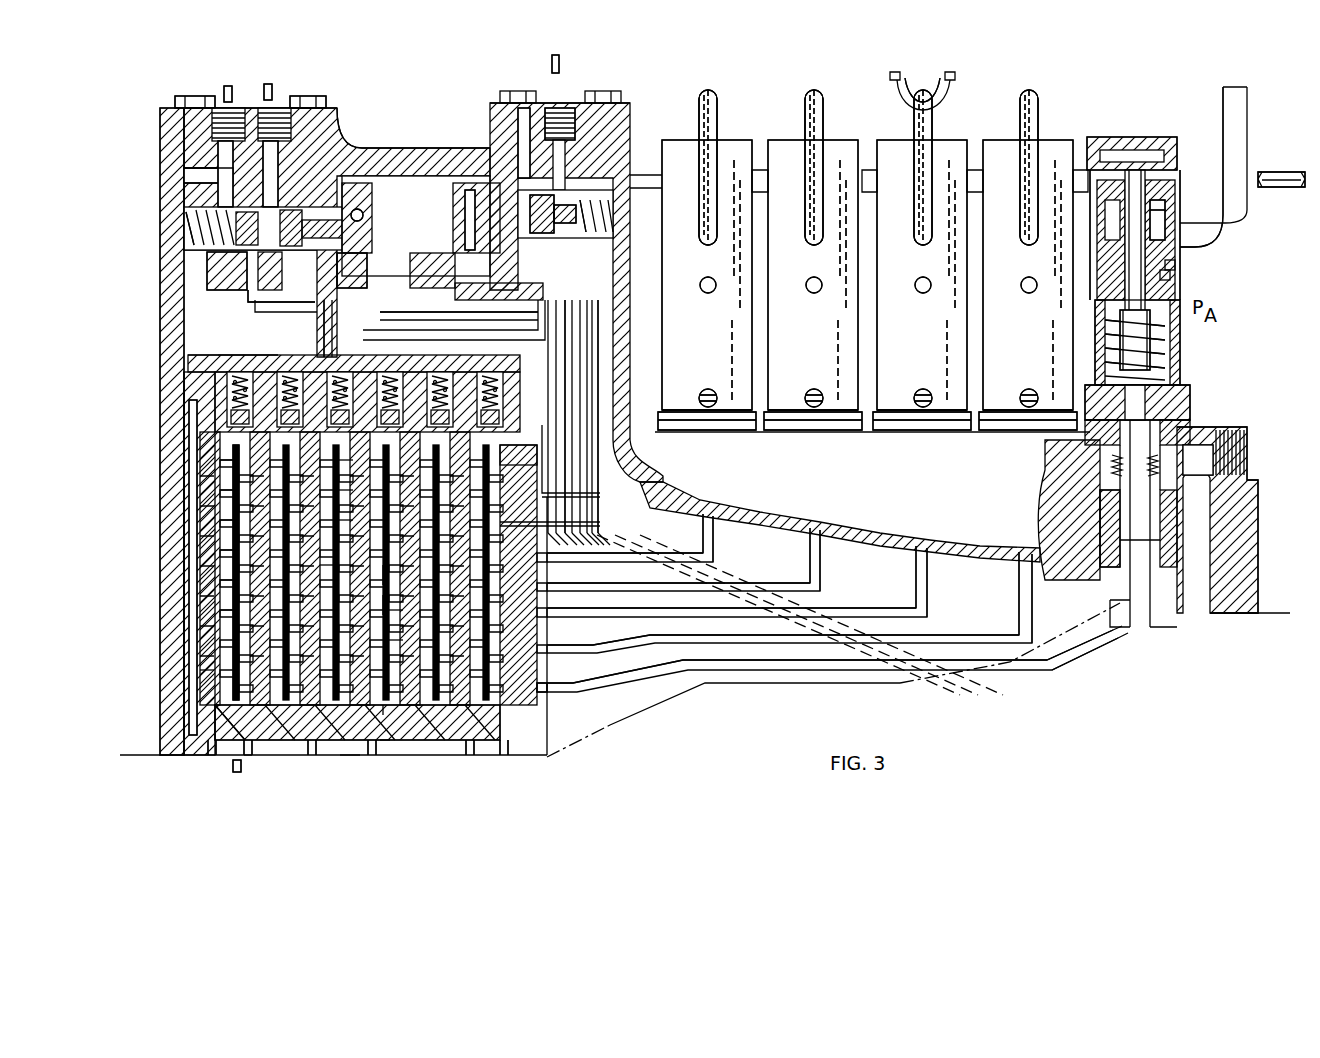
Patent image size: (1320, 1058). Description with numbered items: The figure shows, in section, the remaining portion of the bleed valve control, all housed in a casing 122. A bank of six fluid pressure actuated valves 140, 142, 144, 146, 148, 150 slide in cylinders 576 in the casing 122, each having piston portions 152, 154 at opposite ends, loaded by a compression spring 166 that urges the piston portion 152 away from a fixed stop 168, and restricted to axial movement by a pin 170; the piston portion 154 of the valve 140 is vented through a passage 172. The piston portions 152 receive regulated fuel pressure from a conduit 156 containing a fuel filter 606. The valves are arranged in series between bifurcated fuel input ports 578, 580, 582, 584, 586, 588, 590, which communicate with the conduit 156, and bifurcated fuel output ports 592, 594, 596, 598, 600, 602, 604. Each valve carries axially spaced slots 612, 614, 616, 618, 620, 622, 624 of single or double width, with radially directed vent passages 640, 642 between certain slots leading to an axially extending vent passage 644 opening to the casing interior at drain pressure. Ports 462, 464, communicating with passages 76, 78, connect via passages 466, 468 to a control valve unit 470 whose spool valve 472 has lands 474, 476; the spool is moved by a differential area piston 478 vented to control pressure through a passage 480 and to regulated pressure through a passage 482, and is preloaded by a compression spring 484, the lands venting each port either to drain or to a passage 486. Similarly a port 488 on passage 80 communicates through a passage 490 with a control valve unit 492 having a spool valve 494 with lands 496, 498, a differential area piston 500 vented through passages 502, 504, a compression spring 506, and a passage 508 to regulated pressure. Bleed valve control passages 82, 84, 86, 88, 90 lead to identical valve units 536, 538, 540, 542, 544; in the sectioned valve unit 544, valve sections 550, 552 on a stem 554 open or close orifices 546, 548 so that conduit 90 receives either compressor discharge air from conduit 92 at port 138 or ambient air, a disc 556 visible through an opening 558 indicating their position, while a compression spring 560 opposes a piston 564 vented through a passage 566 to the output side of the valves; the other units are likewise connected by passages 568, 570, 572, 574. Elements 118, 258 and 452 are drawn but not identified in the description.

The passage 76 is at (228, 86).
The passage 78 is at (270, 84).
The passage 80 is at (557, 58).
The bleed valve control passage 82 is at (717, 100).
The bleed valve control passage 84 is at (817, 95).
The bleed valve control passage 86 is at (932, 130).
The bleed valve control passage 88 is at (1035, 112).
The conduit 90 is at (1247, 112).
The conduit 92 is at (1268, 172).
The yoke 118 is at (910, 98).
The casing 122 is at (1230, 578).
The port 138 is at (1160, 197).
The fluid pressure actuated valve 140 is at (212, 760).
The fluid pressure actuated valve 142 is at (242, 760).
The fluid pressure actuated valve 144 is at (312, 760).
The fluid pressure actuated valve 146 is at (372, 760).
The fluid pressure actuated valve 148 is at (470, 760).
The fluid pressure actuated valve 150 is at (505, 727).
The piston portion 152 is at (186, 416).
The piston portion 154 is at (258, 770).
The conduit 156 is at (188, 397).
The compression spring 166 is at (185, 385).
The fixed stop 168 is at (240, 385).
The pin 170 is at (385, 760).
The passage 172 is at (232, 772).
The pin 258 is at (350, 762).
The pin 452 is at (505, 760).
The port 462 is at (218, 108).
The port 464 is at (285, 108).
The passage 466 is at (210, 175).
The passage 468 is at (345, 150).
The control valve unit 470 is at (359, 110).
The spool valve 472 is at (248, 258).
The annular land 474 is at (236, 224).
The annular land 476 is at (281, 228).
The differential area piston 478 is at (370, 209).
The passage 480 is at (365, 294).
The passage 482 is at (322, 320).
The compression spring 484 is at (185, 210).
The passage 486 is at (248, 311).
The port 488 is at (553, 108).
The passage 490 is at (528, 160).
The control valve unit 492 is at (636, 109).
The spool valve 494 is at (573, 262).
The land 496 is at (548, 229).
The land 498 is at (578, 221).
The differential area piston 500 is at (465, 244).
The passage 502 is at (500, 302).
The passage 504 is at (420, 162).
The compression spring 506 is at (605, 239).
The passage 508 is at (605, 273).
The valve unit 536 is at (707, 260).
The valve unit 538 is at (813, 260).
The valve unit 540 is at (922, 260).
The valve unit 542 is at (1028, 260).
The valve unit 544 is at (1133, 137).
The orifice 546 is at (1163, 214).
The orifice 548 is at (1175, 267).
The valve section 550 is at (1160, 190).
The valve section 552 is at (1165, 276).
The stem 554 is at (1150, 397).
The disc 556 is at (1172, 369).
The opening 558 is at (1170, 412).
The compression spring 560 is at (1170, 347).
The piston 564 is at (1110, 522).
The passage 566 is at (1083, 665).
The passage 568 is at (713, 540).
The passage 570 is at (820, 568).
The passage 572 is at (927, 594).
The passage 574 is at (1032, 602).
The cylinder 576 is at (192, 682).
The bifurcated fuel input port 578 is at (195, 717).
The bifurcated fuel input port 580 is at (200, 663).
The bifurcated fuel input port 582 is at (205, 628).
The bifurcated fuel input port 584 is at (205, 592).
The bifurcated fuel input port 586 is at (205, 558).
The bifurcated fuel input port 588 is at (205, 524).
The bifurcated fuel input port 590 is at (210, 490).
The bifurcated fuel output port 592 is at (530, 702).
The bifurcated fuel output port 594 is at (530, 672).
The bifurcated fuel output port 596 is at (530, 643).
The bifurcated fuel output port 598 is at (525, 612).
The bifurcated fuel output port 600 is at (525, 582).
The bifurcated fuel output port 602 is at (525, 553).
The bifurcated fuel output port 604 is at (520, 448).
The fuel filter 606 is at (190, 737).
The slot 612 is at (372, 722).
The slot 614 is at (358, 677).
The slot 616 is at (358, 650).
The slot 618 is at (352, 594).
The slot 620 is at (358, 550).
The slot 622 is at (358, 518).
The slot 624 is at (355, 484).
The radially directed vent passage 640 is at (410, 578).
The radially directed vent passage 642 is at (410, 616).
The axially extending vent passage 644 is at (234, 462).